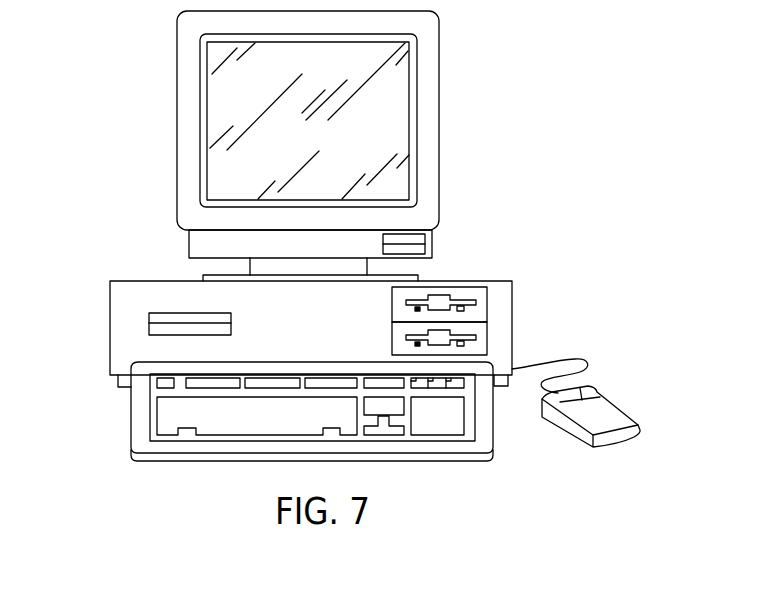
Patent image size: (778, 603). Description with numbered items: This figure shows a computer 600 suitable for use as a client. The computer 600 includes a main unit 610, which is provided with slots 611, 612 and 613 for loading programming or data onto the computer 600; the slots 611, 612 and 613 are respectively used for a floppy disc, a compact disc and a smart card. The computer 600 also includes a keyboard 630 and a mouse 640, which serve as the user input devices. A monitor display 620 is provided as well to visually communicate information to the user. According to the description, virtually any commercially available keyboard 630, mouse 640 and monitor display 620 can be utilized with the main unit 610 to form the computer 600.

The computer 600 is at (600, 165).
The main unit 610 is at (132, 281).
The slot 611 is at (392, 302).
The slot 612 is at (392, 338).
The slot 613 is at (150, 330).
The monitor display 620 is at (439, 104).
The keyboard 630 is at (130, 422).
The mouse 640 is at (613, 409).